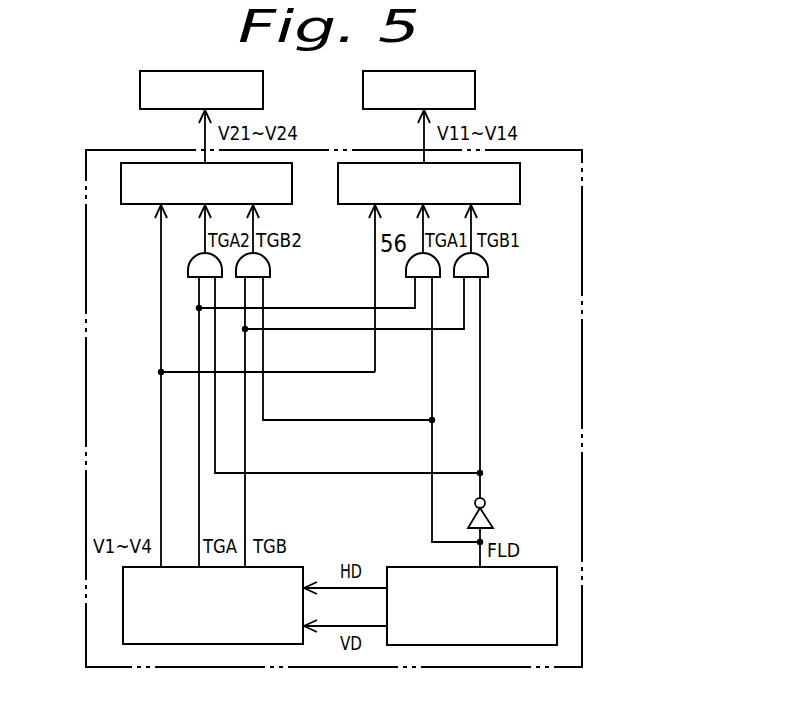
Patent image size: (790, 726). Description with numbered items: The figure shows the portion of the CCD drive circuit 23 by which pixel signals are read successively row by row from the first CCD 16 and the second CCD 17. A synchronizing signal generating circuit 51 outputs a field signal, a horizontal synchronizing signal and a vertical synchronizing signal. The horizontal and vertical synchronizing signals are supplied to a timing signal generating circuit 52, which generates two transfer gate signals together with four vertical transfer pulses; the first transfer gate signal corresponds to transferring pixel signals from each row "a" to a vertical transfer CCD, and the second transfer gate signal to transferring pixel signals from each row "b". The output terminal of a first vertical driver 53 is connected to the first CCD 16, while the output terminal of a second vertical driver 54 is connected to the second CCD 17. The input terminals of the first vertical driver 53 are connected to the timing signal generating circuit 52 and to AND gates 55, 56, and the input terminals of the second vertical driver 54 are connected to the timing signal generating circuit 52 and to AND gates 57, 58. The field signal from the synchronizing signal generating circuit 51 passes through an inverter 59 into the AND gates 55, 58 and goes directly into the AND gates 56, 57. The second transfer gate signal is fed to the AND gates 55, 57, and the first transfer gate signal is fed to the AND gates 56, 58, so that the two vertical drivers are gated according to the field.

The first CCD 16 is at (475, 93).
The second CCD 17 is at (263, 93).
The CCD drive circuit 23 is at (582, 586).
The synchronizing signal generating circuit 51 is at (557, 618).
The timing signal generating circuit 52 is at (123, 601).
The first vertical driver 53 is at (520, 180).
The second vertical driver 54 is at (138, 206).
The AND gate 55 is at (488, 271).
The AND gate 56 is at (408, 271).
The AND gate 57 is at (270, 272).
The AND gate 58 is at (189, 272).
The inverter 59 is at (488, 519).